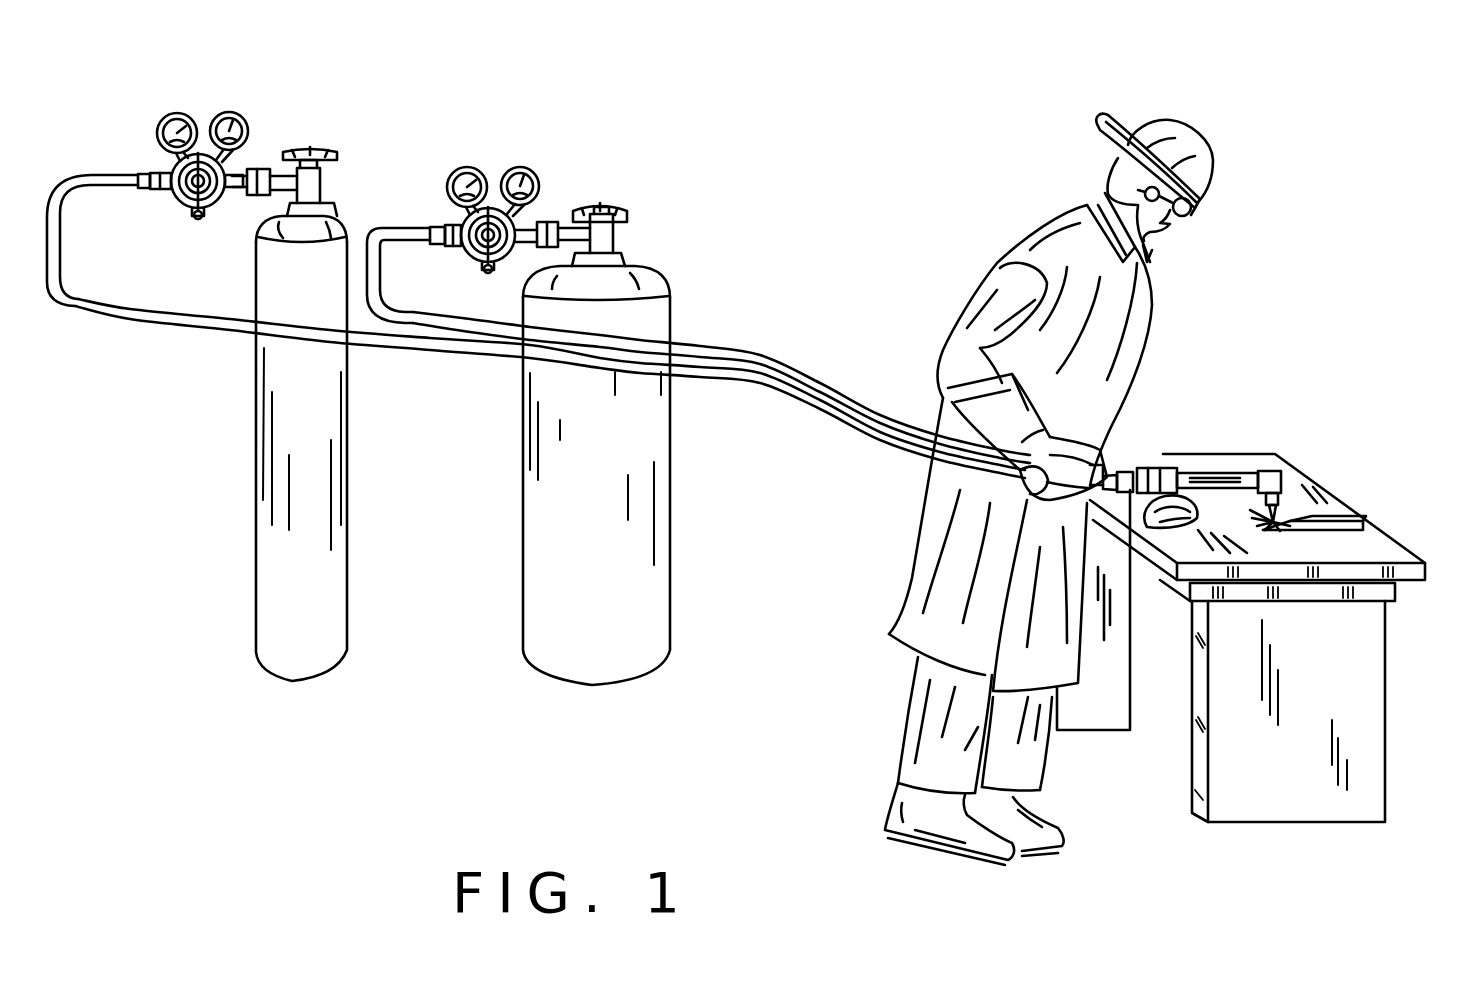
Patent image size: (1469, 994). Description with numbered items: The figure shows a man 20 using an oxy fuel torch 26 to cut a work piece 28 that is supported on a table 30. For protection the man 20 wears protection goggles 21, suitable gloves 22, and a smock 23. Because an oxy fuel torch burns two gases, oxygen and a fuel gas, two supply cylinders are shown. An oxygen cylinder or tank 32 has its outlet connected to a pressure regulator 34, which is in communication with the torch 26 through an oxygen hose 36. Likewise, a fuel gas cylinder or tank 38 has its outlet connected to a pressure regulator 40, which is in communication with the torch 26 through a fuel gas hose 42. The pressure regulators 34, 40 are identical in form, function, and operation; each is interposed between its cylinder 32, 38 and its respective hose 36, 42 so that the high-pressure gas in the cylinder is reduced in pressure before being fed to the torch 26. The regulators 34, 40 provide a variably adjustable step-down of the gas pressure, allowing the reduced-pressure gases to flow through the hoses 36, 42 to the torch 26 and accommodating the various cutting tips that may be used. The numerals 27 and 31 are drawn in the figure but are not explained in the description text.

The man 20 is at (1084, 489).
The protection goggles 21 is at (1193, 210).
The gloves 22 is at (943, 395).
The smock 23 is at (1143, 309).
The oxy fuel torch 26 is at (1173, 467).
The torch handle 27 is at (1112, 462).
The work piece 28 is at (1360, 547).
The table 30 is at (1360, 676).
The workpiece 31 is at (1287, 507).
The oxygen cylinder 32 is at (270, 578).
The pressure regulator 34 is at (172, 168).
The oxygen hose 36 is at (157, 318).
The fuel gas cylinder 38 is at (633, 498).
The pressure regulator 40 is at (462, 216).
The fuel gas hose 42 is at (707, 350).